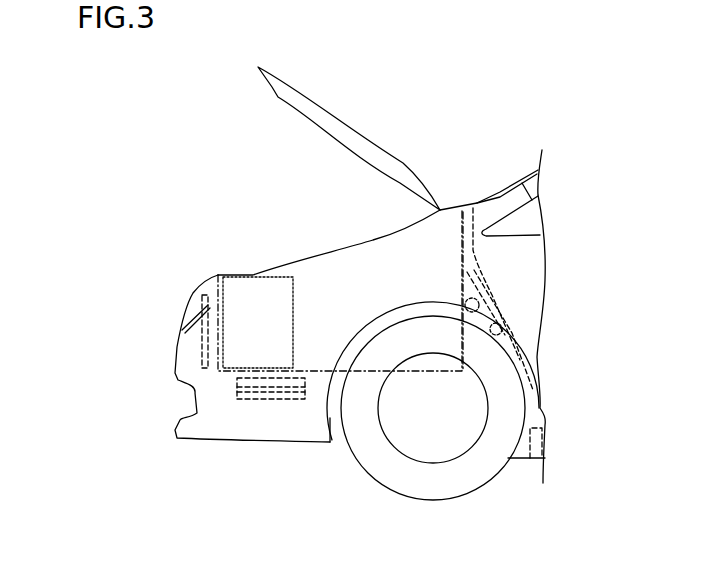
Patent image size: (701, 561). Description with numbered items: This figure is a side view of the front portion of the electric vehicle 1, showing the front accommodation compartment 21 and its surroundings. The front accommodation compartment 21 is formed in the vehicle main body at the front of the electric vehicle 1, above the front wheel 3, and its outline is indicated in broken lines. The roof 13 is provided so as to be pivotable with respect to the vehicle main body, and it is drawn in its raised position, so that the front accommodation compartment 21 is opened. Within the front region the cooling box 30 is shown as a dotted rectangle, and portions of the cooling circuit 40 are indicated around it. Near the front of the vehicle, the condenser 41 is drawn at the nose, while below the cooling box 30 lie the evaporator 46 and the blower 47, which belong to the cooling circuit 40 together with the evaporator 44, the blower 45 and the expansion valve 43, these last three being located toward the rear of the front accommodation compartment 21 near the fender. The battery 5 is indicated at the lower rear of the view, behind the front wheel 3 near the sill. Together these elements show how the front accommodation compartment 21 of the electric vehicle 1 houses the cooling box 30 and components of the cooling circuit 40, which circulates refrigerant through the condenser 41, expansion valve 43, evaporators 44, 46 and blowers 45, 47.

The electric vehicle 1 is at (597, 142).
The front wheel 3 is at (433, 500).
The battery 5 is at (538, 460).
The roof 13 is at (280, 80).
The front accommodation compartment 21 is at (323, 232).
The cooling box 30 is at (248, 287).
The cooling circuit 40 is at (250, 400).
The condenser 41 is at (182, 328).
The expansion valve 43 is at (503, 333).
The evaporator 44 is at (487, 280).
The blower 45 is at (483, 300).
The evaporator 46 is at (267, 387).
The blower 47 is at (302, 392).